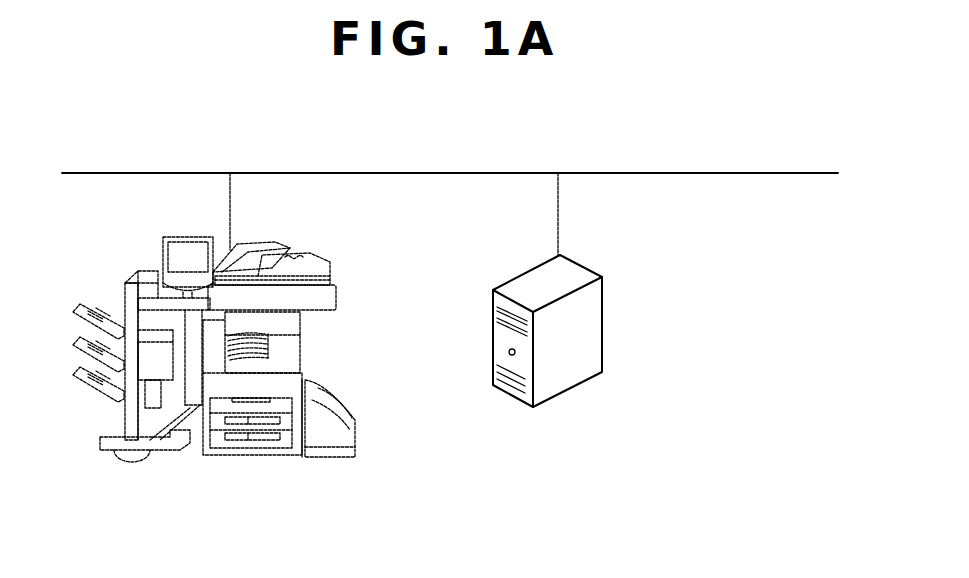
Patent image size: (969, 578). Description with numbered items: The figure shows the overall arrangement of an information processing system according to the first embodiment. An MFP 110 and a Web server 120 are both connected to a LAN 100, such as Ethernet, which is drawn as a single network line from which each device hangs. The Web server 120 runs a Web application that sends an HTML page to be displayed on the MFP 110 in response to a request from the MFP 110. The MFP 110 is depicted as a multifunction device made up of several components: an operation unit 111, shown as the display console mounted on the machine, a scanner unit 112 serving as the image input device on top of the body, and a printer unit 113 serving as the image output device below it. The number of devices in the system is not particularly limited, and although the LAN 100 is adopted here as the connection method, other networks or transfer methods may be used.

The LAN 100 is at (686, 172).
The MFP 110 is at (235, 366).
The operation unit 111 is at (182, 237).
The scanner unit 112 is at (300, 272).
The printer unit 113 is at (287, 358).
The Web server 120 is at (604, 322).